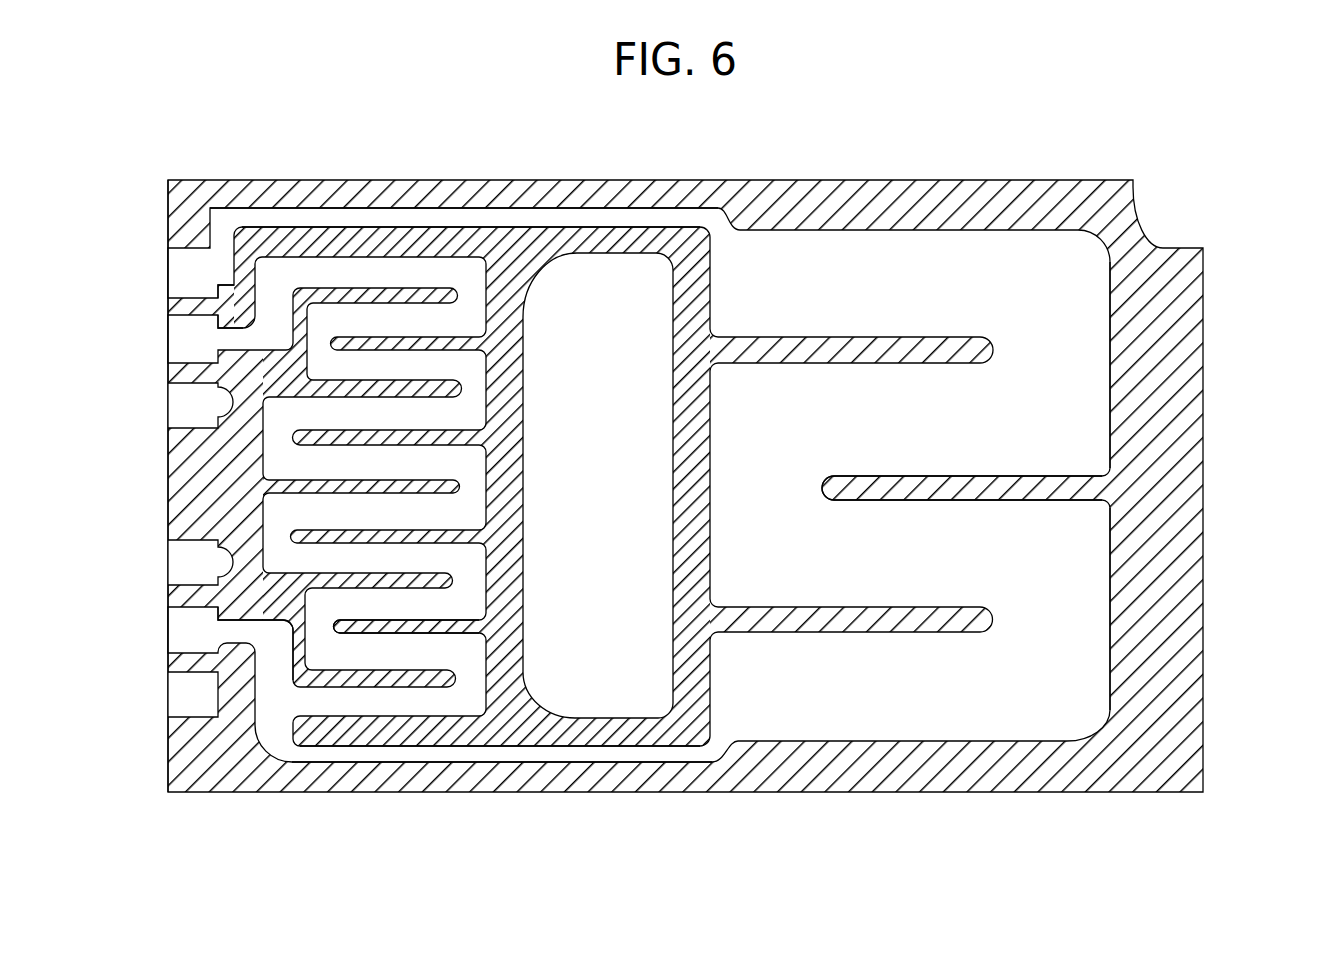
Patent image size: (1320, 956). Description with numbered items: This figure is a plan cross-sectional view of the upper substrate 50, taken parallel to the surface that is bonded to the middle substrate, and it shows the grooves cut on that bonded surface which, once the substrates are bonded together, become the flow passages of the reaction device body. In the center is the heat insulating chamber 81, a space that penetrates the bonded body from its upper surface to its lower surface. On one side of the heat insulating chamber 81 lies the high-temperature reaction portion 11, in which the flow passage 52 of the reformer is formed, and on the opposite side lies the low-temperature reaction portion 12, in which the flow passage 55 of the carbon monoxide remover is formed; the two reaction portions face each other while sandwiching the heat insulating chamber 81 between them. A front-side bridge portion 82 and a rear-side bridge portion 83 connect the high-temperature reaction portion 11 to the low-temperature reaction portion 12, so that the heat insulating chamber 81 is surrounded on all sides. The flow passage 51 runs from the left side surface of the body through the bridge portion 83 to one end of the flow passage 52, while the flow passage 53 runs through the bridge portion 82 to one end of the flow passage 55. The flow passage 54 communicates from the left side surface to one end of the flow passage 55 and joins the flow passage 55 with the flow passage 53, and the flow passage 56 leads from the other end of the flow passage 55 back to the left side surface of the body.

The high-temperature reaction portion 11 is at (935, 490).
The low-temperature reaction portion 12 is at (368, 627).
The upper substrate 50 is at (1204, 427).
The flow passage 51 is at (468, 222).
The flow passage 52 is at (1071, 332).
The flow passage 53 is at (409, 752).
The flow passage 54 is at (233, 632).
The flow passage 55 is at (367, 322).
The flow passage 56 is at (244, 340).
The heat insulating chamber 81 is at (642, 704).
The bridge portion 82 is at (566, 775).
The bridge portion 83 is at (608, 196).